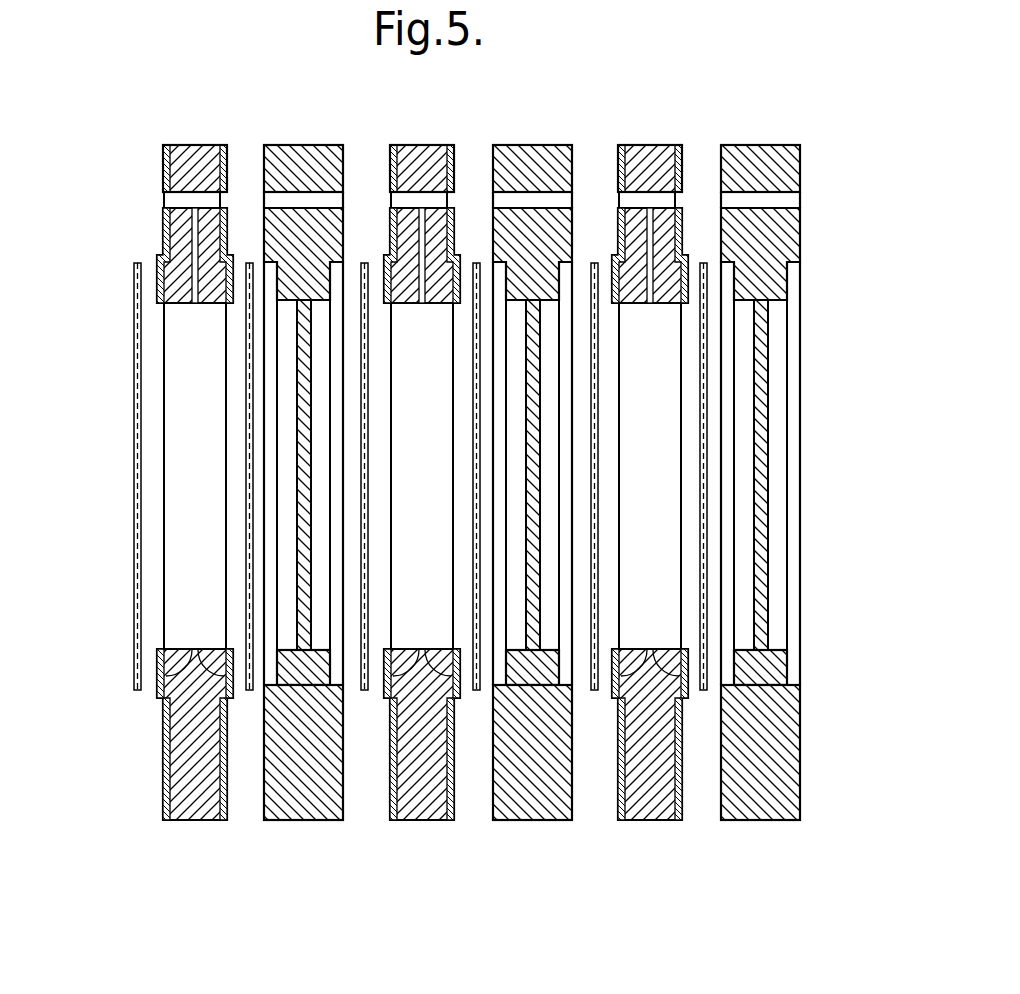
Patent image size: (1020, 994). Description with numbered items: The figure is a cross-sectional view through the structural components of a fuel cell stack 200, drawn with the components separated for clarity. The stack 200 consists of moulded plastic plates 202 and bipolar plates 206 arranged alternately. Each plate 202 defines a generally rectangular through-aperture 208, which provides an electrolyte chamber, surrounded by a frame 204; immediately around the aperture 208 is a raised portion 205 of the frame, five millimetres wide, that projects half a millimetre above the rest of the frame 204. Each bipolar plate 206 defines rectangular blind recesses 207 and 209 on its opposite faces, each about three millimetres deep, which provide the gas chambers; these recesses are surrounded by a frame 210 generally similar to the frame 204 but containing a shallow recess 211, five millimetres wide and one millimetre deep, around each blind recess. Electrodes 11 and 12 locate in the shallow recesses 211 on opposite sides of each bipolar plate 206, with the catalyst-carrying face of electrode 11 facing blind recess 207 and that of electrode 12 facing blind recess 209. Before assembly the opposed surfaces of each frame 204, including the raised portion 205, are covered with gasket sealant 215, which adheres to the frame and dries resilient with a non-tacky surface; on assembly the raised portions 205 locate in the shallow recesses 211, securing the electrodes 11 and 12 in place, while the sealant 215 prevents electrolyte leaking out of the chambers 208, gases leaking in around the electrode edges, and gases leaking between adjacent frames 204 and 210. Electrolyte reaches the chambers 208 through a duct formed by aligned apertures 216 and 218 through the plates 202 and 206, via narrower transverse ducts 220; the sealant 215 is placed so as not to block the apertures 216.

The cell stack 200 is at (548, 77).
The moulded plastic plate 202 is at (194, 160).
The bipolar plate 206 is at (302, 158).
The aperture 218 is at (328, 200).
The aperture 216 is at (182, 202).
The transverse duct 220 is at (192, 253).
The blind recess 209 is at (287, 362).
The electrode 12 is at (245, 418).
The through-aperture 208 is at (176, 513).
The electrode 11 is at (134, 577).
The blind recess 207 is at (317, 503).
The raised portion of the frame 205 is at (198, 650).
The gasket sealant 215 is at (166, 806).
The frame 204 is at (193, 802).
The shallow recess 211 is at (336, 675).
The frame 210 is at (336, 806).